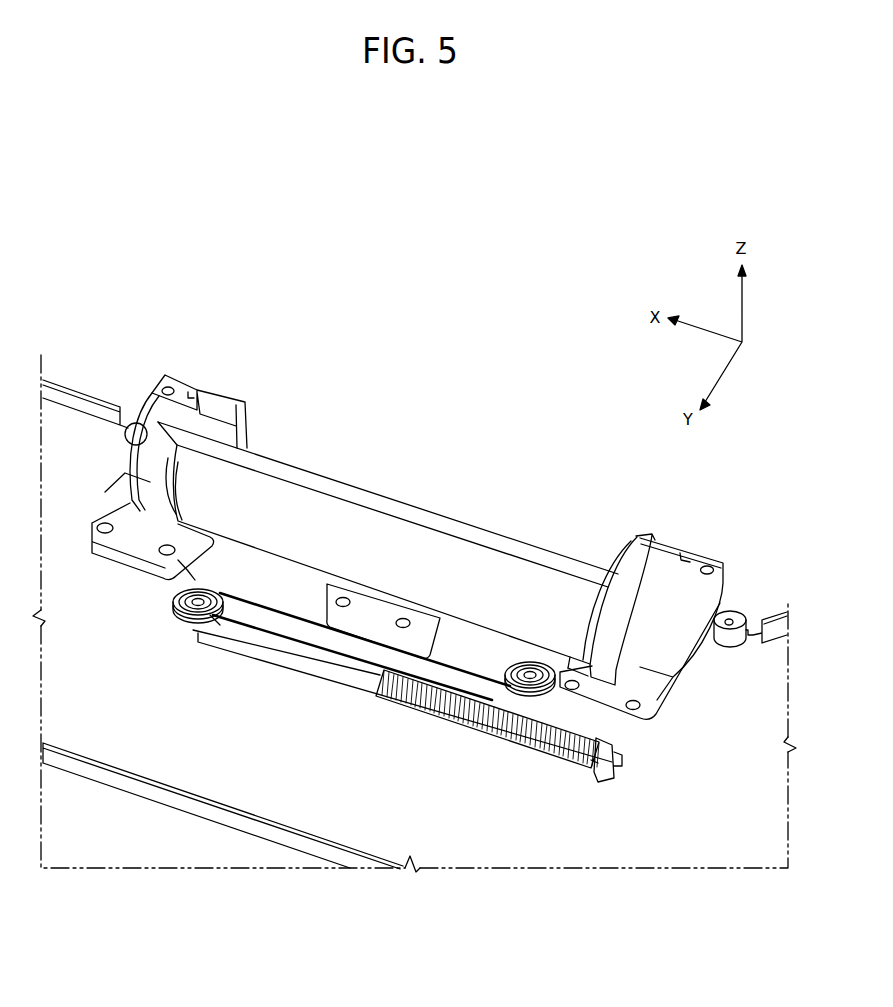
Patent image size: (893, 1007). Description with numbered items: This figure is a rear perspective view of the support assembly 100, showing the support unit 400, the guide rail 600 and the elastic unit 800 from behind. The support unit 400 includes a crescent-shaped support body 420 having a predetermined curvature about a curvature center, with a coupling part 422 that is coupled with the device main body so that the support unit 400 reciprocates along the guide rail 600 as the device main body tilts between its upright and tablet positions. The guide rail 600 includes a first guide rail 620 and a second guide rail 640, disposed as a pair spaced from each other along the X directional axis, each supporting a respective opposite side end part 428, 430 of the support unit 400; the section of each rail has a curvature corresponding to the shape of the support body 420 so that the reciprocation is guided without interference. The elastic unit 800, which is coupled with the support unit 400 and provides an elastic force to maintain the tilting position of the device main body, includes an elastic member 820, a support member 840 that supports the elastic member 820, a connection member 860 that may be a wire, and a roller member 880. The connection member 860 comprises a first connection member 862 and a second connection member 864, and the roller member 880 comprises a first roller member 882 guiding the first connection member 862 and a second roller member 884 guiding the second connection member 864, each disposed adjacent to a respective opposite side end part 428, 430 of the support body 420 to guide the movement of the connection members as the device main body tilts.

The support assembly 100 is at (230, 256).
The support unit 400 is at (340, 509).
The support body 420 is at (400, 535).
The coupling part 422 is at (470, 523).
The opposite side end part 428 is at (583, 637).
The opposite side end part 430 is at (177, 490).
The guide rail 600 is at (696, 472).
The first guide rail 620 is at (608, 688).
The second guide rail 640 is at (697, 592).
The elastic unit 800 is at (140, 732).
The elastic member 820 is at (437, 713).
The support member 840 is at (597, 777).
The connection member 860 is at (193, 708).
The first connection member 862 is at (180, 580).
The second connection member 864 is at (220, 608).
The roller member 880 is at (245, 728).
The first roller member 882 is at (213, 612).
The second roller member 884 is at (480, 697).